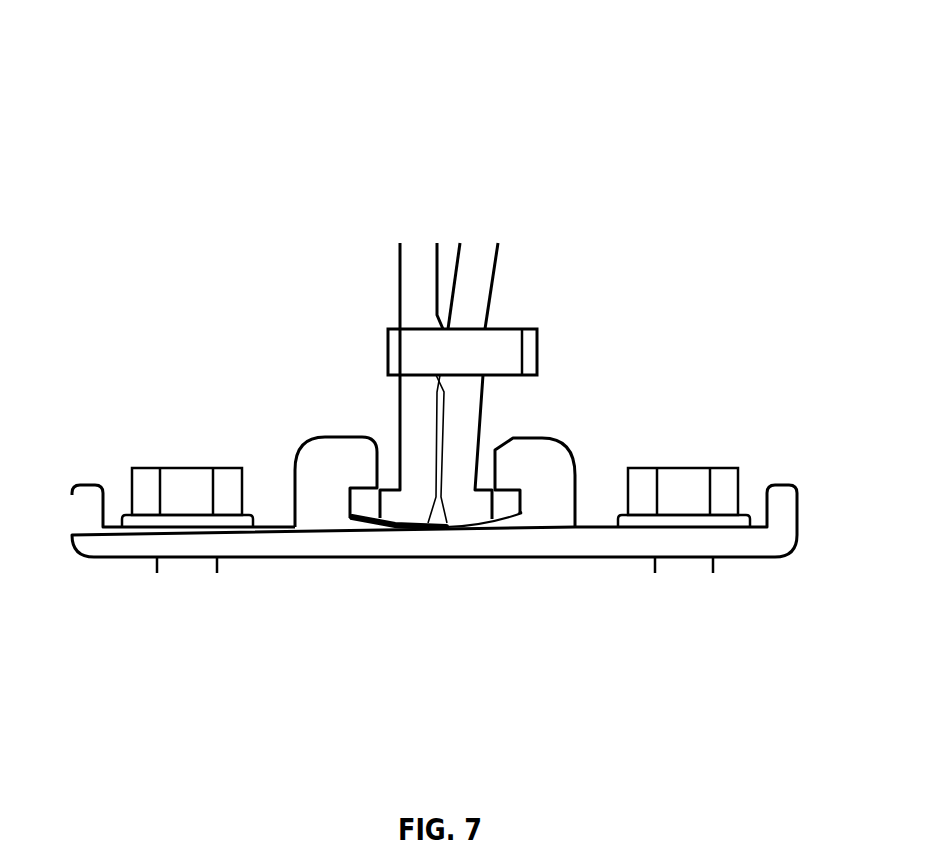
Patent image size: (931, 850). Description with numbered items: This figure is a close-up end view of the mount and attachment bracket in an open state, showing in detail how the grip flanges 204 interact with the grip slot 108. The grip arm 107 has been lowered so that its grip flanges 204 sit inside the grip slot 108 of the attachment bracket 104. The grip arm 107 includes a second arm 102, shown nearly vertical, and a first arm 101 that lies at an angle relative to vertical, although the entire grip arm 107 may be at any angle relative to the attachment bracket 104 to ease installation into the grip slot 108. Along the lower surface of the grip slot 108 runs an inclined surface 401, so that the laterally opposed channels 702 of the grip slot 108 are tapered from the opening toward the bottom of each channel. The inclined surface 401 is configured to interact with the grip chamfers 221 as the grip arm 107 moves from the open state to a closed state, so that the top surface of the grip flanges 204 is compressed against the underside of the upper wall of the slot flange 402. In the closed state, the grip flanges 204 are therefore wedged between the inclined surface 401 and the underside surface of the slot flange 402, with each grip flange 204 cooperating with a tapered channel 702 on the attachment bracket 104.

The grip arm 107 is at (487, 93).
The second arm 102 is at (349, 279).
The first arm 101 is at (521, 271).
The grip slot 108 is at (377, 436).
The slot flange 402 is at (522, 466).
The attachment bracket 104 is at (250, 596).
The grip flanges 204 is at (386, 528).
The grip chamfers 221 is at (475, 536).
The inclined surface 401 is at (513, 537).
The laterally opposed channels 702 is at (347, 524).